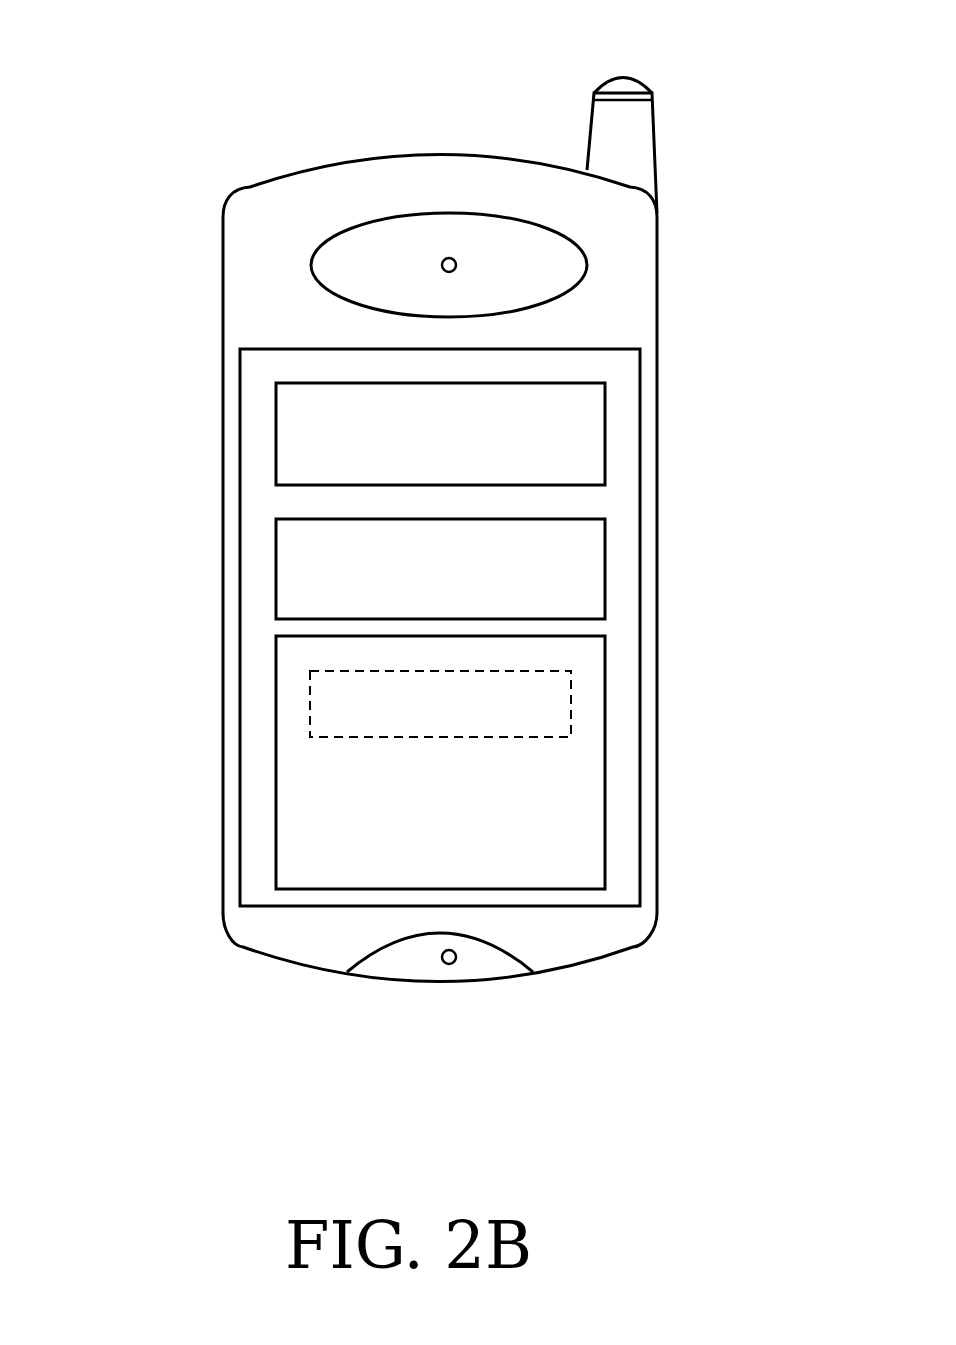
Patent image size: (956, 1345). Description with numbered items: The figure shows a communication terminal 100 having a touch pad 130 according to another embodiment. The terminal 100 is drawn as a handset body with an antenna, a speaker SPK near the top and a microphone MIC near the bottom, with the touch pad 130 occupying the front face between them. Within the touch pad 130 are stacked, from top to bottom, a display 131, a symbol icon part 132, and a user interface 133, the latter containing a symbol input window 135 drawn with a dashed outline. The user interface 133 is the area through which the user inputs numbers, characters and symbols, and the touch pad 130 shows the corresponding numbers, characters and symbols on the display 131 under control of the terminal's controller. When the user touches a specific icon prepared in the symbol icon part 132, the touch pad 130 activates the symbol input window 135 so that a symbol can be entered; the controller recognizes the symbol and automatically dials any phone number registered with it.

The mobile communication terminal 100 is at (436, 562).
The touch pad 130 is at (255, 632).
The display 131 is at (583, 440).
The symbol icon part 132 is at (592, 565).
The user interface 133 is at (592, 767).
The symbol input window 135 is at (575, 682).
The speaker SPK is at (587, 270).
The microphone MIC is at (449, 965).